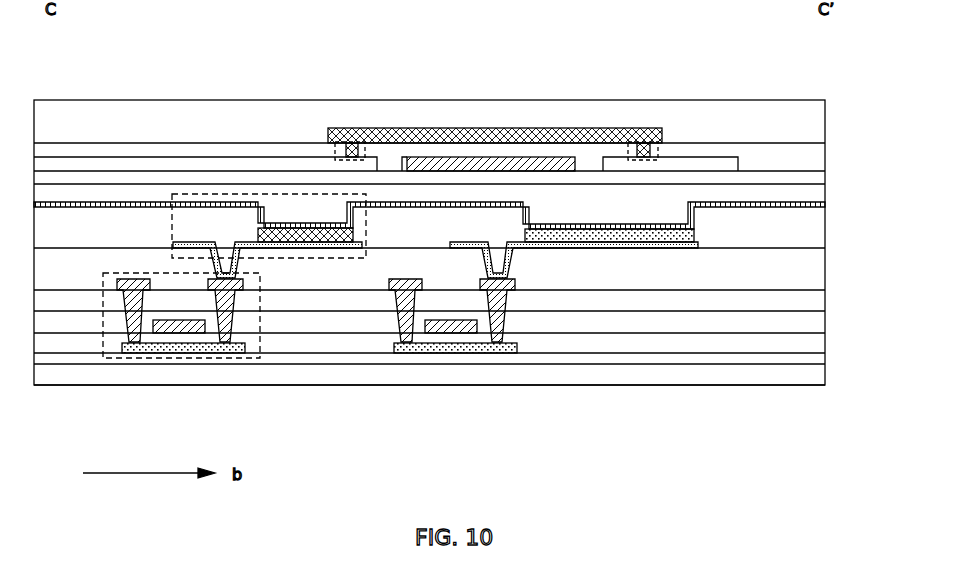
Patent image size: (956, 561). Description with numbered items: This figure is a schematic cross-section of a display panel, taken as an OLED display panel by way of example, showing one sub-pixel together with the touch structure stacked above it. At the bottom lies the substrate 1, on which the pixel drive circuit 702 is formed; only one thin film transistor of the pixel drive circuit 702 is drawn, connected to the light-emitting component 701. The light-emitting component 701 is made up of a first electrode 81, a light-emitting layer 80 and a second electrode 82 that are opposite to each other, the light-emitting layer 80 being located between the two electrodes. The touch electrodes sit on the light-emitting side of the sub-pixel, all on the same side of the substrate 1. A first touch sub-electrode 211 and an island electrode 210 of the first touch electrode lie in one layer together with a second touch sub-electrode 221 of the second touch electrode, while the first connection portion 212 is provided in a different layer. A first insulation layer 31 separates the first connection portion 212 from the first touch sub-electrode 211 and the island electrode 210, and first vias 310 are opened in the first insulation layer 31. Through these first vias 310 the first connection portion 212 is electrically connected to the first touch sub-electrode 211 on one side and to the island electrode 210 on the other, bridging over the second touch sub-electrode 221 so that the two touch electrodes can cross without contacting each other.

The substrate 1 is at (790, 380).
The first insulation layer 31 is at (235, 150).
The first touch sub-electrode 211 is at (152, 163).
The first connection portion 212 is at (470, 128).
The second touch sub-electrode 221 is at (415, 165).
The island electrode 210 is at (723, 162).
The first via 310 is at (341, 142).
The second electrode 82 is at (680, 223).
The light-emitting layer 80 is at (592, 240).
The first electrode 81 is at (543, 247).
The light-emitting component 701 is at (303, 260).
The pixel drive circuit 702 is at (242, 358).